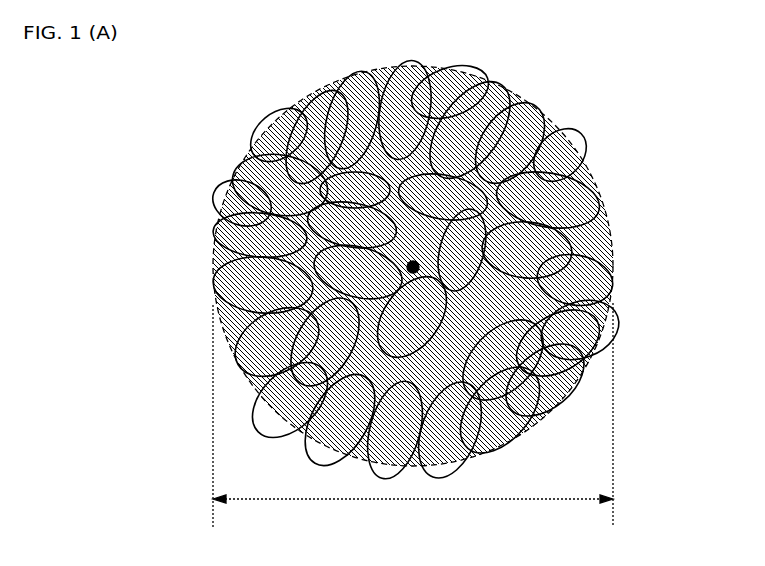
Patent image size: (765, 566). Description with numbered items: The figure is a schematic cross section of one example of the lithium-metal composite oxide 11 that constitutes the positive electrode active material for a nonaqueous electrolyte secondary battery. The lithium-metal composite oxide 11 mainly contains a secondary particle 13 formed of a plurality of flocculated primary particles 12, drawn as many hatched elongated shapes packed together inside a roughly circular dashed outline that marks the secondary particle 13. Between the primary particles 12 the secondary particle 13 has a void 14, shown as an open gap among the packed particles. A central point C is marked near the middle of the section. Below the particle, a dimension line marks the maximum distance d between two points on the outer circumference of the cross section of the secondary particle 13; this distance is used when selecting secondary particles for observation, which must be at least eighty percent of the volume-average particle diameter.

The lithium-metal composite oxide 11 is at (699, 65).
The primary particle 12 is at (545, 122).
The secondary particle 13 is at (600, 200).
The void 14 is at (213, 263).
The center of conductor C is at (418, 272).
The maximum distance d is at (413, 420).